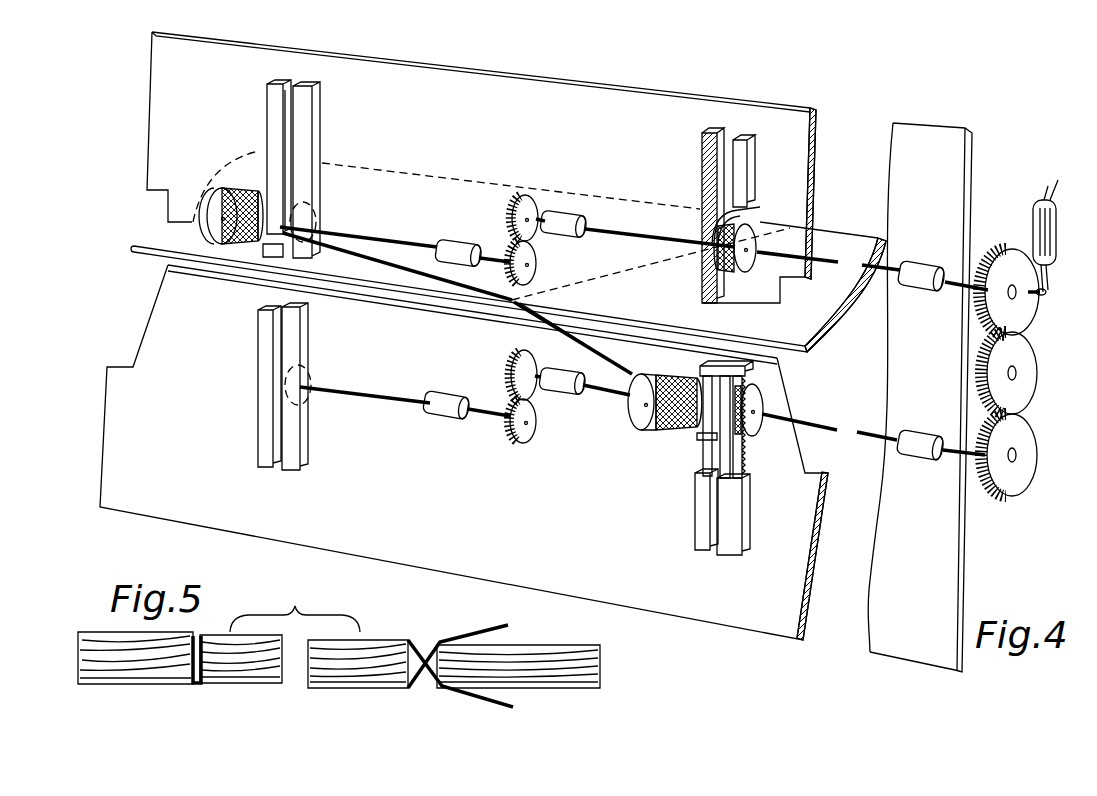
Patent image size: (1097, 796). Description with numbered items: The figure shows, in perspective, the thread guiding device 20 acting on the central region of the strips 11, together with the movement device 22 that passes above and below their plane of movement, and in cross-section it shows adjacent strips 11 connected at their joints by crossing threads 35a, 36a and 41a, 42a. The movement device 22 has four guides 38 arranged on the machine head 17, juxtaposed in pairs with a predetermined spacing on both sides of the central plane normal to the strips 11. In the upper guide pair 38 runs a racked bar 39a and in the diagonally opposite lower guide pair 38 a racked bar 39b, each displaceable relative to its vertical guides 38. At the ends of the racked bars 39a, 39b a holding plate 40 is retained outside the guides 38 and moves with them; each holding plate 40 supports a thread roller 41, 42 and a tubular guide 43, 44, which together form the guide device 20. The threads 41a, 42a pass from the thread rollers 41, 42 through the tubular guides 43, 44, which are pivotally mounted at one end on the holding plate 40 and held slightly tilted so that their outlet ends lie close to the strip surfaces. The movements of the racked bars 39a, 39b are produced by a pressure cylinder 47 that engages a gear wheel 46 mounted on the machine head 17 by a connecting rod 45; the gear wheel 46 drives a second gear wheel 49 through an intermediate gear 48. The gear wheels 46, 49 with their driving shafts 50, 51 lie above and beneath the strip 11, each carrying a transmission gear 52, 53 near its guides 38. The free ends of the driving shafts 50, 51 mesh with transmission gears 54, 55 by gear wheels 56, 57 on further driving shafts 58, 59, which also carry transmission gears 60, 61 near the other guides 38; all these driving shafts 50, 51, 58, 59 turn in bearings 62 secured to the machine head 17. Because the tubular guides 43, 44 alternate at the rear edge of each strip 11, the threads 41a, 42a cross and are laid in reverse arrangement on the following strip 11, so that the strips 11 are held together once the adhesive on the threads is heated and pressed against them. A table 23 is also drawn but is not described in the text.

In FIG. 4, the strip 11 is at (827, 297).
In FIG. 5, the strip 11 is at (560, 678).
In FIG. 4, the machine head 17 is at (945, 136).
In FIG. 4, the thread guiding device 20 is at (545, 323).
In FIG. 4, the movement device 22 is at (322, 98).
In FIG. 4, the table 23 is at (651, 333).
In FIG. 4, the guide 38 is at (268, 97).
In FIG. 4, the racked bar 39a is at (283, 141).
In FIG. 4, the racked bar 39b is at (743, 453).
In FIG. 4, the holding plate 40 is at (266, 197).
In FIG. 4, the thread roller 41 is at (222, 246).
In FIG. 4, the thread 41a is at (260, 244).
In FIG. 4, the thread roller 42 is at (636, 416).
In FIG. 4, the thread 42a is at (600, 374).
In FIG. 4, the tubular guide 43 is at (392, 258).
In FIG. 4, the tubular guide 44 is at (598, 384).
In FIG. 4, the connecting rod 45 is at (1050, 279).
In FIG. 4, the gear wheel 46 is at (1027, 320).
In FIG. 4, the pressure cylinder 47 is at (1060, 216).
In FIG. 4, the intermediate gear 48 is at (1030, 366).
In FIG. 4, the second gear wheel 49 is at (1028, 439).
In FIG. 4, the driving shaft 50 is at (606, 234).
In FIG. 4, the driving shaft 51 is at (828, 434).
In FIG. 4, the transmission gear 52 is at (757, 243).
In FIG. 4, the transmission gear 53 is at (753, 400).
In FIG. 4, the transmission gear 54 is at (530, 200).
In FIG. 4, the transmission gear 55 is at (508, 377).
In FIG. 4, the gear wheel 56 is at (536, 264).
In FIG. 4, the gear wheel 57 is at (516, 441).
In FIG. 4, the driving shaft 58 is at (356, 233).
In FIG. 4, the driving shaft 59 is at (378, 408).
In FIG. 4, the transmission gear 60 is at (318, 214).
In FIG. 4, the transmission gear 61 is at (313, 380).
In FIG. 4, the bearing 62 is at (453, 241).
In FIG. 5, the thread 35a is at (480, 705).
In FIG. 5, the thread 36a is at (457, 638).